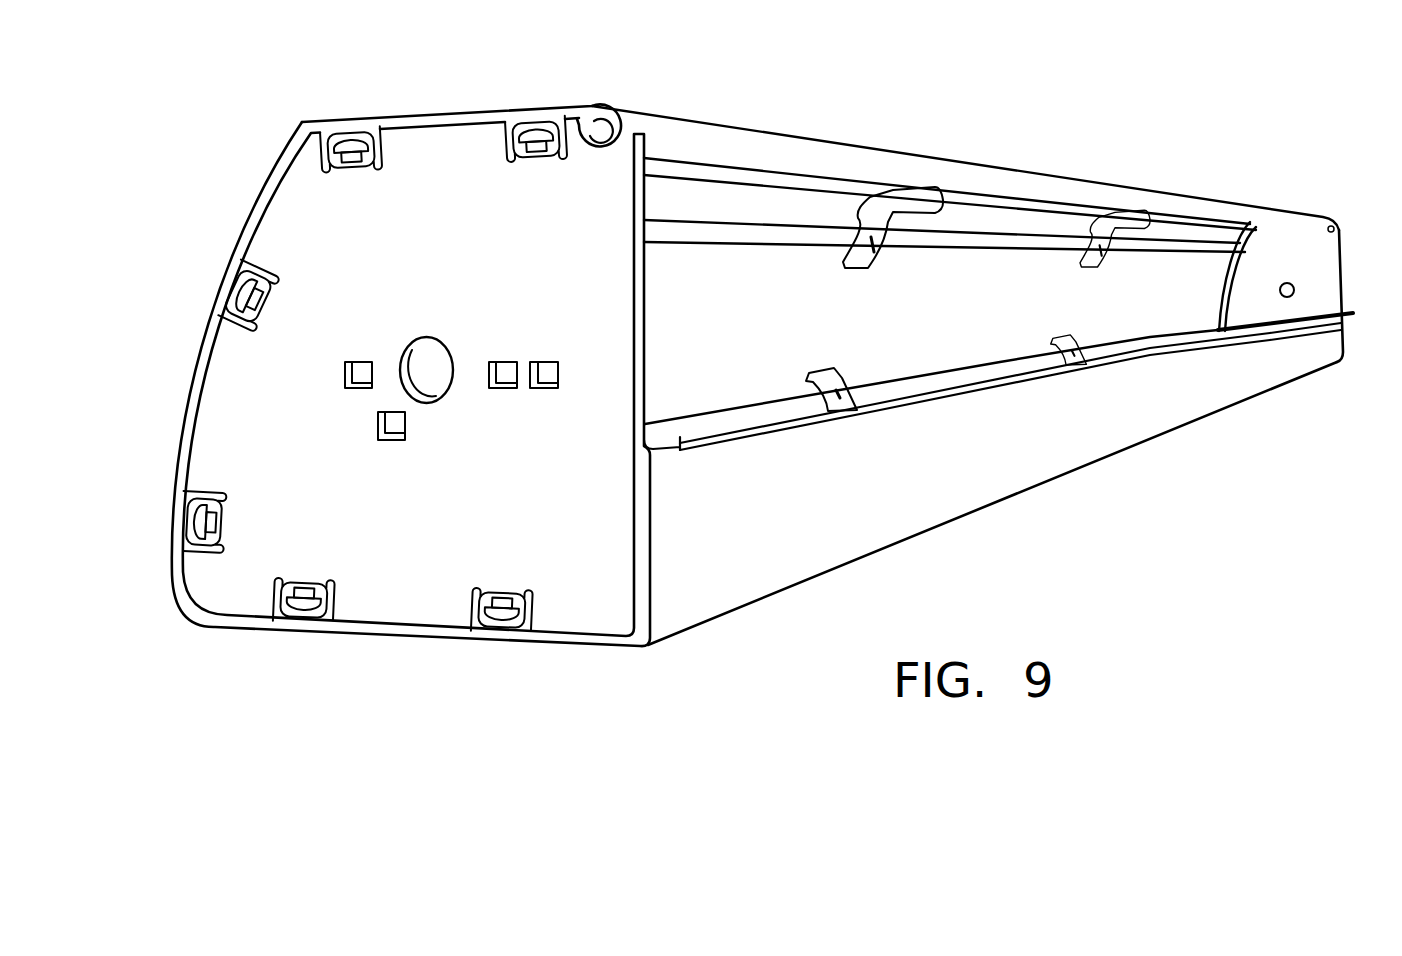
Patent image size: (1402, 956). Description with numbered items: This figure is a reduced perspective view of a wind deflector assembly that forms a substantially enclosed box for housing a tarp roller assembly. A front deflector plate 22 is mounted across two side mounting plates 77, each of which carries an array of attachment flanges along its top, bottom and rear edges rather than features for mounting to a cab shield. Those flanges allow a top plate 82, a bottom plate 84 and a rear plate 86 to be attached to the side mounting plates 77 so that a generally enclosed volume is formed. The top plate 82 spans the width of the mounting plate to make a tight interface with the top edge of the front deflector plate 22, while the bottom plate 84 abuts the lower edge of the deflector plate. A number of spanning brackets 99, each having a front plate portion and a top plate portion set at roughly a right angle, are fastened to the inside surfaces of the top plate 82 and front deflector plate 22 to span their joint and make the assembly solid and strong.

The front deflector plate 22 is at (203, 330).
The side mounting plate 77 is at (1317, 258).
The top plate 82 is at (432, 122).
The bottom plate 84 is at (240, 618).
The rear plate 86 is at (873, 488).
The spanning bracket 99 is at (877, 212).